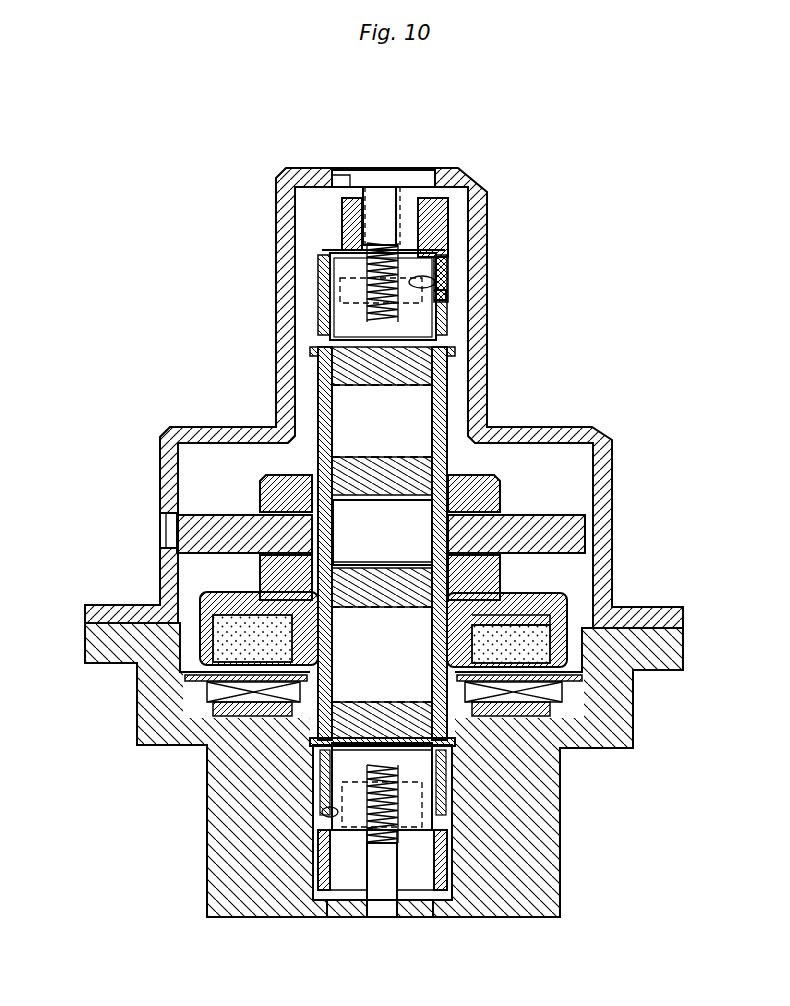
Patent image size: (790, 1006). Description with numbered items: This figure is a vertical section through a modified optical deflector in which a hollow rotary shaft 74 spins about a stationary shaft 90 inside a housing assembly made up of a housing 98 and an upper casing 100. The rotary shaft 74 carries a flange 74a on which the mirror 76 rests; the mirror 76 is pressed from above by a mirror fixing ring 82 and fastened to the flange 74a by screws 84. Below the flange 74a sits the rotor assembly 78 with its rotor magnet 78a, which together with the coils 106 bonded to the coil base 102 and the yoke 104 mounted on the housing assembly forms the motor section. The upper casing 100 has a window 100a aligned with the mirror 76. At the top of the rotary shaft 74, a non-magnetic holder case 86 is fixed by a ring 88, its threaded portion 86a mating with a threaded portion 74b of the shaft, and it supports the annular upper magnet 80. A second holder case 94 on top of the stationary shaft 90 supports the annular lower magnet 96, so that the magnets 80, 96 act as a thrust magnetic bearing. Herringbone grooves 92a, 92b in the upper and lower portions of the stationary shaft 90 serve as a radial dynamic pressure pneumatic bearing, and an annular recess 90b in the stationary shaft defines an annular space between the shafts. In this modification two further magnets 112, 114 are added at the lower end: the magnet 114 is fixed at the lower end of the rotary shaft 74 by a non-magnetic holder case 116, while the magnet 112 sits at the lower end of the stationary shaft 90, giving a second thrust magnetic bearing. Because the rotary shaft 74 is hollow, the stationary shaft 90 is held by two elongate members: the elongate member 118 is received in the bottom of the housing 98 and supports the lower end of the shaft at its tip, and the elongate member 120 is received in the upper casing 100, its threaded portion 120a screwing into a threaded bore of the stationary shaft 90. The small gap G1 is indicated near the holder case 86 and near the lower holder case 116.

The hollow rotary shaft 74 is at (345, 397).
The flange 74a is at (500, 577).
The threaded portion 74b is at (320, 278).
The mirror 76 is at (567, 525).
The rotor assembly 78 is at (200, 578).
The rotor magnet 78a is at (182, 616).
The annular upper magnet 80 is at (352, 212).
The mirror fixing ring 82 is at (478, 500).
The screws 84 is at (470, 590).
The holder case 86 is at (432, 205).
The threaded portion 86a is at (440, 285).
The ring 88 is at (445, 318).
The stationary shaft 90 is at (322, 352).
The annular recess 90b is at (435, 552).
The herringbone grooves 92a is at (403, 465).
The herringbone grooves 92b is at (400, 592).
The holder case 94 is at (345, 320).
The annular lower magnet 96 is at (340, 288).
The housing 98 is at (618, 722).
The upper casing 100 is at (170, 440).
The window 100a is at (157, 527).
The coil base 102 is at (207, 677).
The yoke 104 is at (213, 712).
The coils 106 is at (207, 690).
The magnet 112 is at (415, 800).
The magnet 114 is at (408, 873).
The holder case 116 is at (323, 893).
The elongate member 118 is at (380, 893).
The elongate member 120 is at (385, 180).
The threaded portion 120a is at (372, 250).
The gap G1 is at (433, 265).